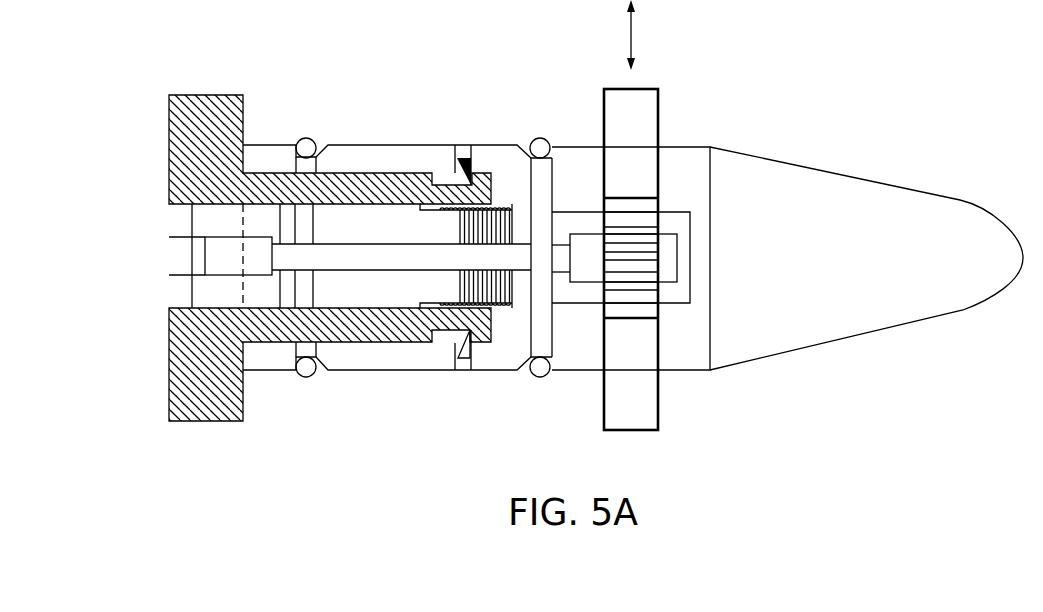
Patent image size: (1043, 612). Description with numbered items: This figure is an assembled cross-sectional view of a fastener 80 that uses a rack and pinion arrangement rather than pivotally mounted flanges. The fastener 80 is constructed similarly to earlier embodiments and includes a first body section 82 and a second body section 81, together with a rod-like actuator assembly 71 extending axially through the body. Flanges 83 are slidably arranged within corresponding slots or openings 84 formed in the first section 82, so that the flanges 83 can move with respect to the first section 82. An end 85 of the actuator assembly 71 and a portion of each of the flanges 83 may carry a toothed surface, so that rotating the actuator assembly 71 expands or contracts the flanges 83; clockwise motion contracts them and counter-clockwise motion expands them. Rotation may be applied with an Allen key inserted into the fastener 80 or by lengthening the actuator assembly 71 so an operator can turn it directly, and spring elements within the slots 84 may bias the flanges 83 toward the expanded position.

The actuator assembly 71 is at (384, 278).
The fastener 80 is at (394, 113).
The second body section 81 is at (208, 96).
The first body section 82 is at (838, 192).
The flanges 83 is at (645, 105).
The slots or openings 84 is at (660, 177).
The end of actuator assembly 85 is at (585, 243).